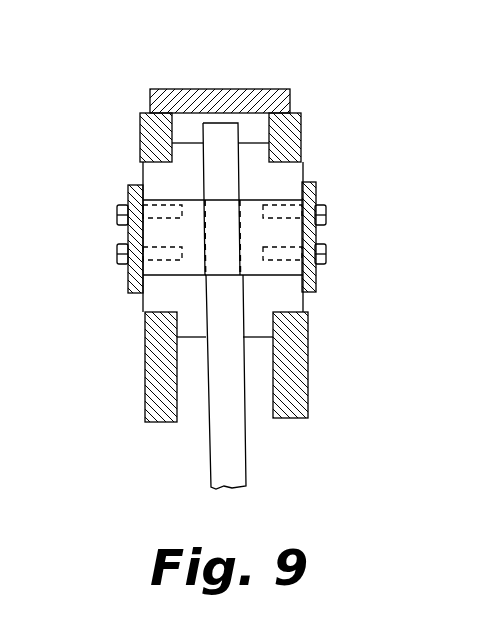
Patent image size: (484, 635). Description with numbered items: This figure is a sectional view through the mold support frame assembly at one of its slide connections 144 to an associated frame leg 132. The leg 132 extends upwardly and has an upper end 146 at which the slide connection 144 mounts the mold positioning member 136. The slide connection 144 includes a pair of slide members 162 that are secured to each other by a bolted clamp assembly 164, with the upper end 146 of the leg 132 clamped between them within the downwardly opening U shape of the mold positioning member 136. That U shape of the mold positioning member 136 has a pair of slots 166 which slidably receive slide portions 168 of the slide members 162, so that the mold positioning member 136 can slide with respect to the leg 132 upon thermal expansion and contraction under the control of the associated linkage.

The leg 132 is at (247, 453).
The mold positioning member 136 is at (292, 97).
The slide connection 144 is at (302, 161).
The upper end 146 is at (220, 133).
The slide member 162 is at (183, 187).
The bolted clamp assembly 164 is at (315, 201).
The slot 166 is at (152, 313).
The slide portion 168 is at (152, 292).